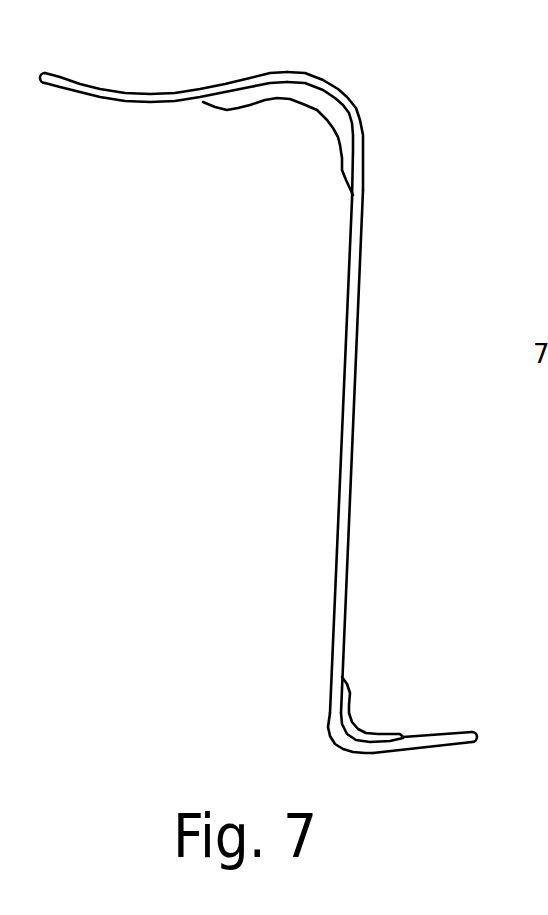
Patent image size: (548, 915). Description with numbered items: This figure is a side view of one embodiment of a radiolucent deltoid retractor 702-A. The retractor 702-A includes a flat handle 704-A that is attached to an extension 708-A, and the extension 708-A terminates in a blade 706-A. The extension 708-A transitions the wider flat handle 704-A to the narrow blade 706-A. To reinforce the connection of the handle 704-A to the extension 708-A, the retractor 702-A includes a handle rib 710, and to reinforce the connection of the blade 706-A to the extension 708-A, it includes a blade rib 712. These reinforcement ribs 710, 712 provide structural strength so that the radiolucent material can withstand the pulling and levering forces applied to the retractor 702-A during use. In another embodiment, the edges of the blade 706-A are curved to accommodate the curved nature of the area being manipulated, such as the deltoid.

The radiolucent deltoid retractor 702-A is at (289, 382).
The flat handle 704-A is at (158, 94).
The blade 706-A is at (458, 728).
The extension 708-A is at (343, 343).
The handle rib 710 is at (278, 98).
The blade rib 712 is at (372, 732).